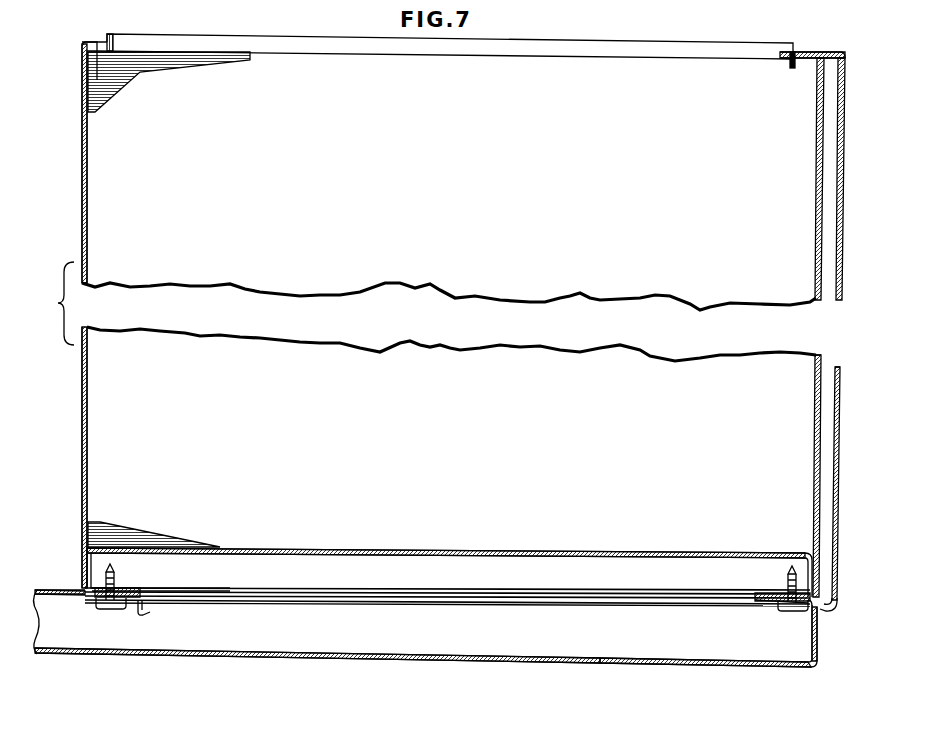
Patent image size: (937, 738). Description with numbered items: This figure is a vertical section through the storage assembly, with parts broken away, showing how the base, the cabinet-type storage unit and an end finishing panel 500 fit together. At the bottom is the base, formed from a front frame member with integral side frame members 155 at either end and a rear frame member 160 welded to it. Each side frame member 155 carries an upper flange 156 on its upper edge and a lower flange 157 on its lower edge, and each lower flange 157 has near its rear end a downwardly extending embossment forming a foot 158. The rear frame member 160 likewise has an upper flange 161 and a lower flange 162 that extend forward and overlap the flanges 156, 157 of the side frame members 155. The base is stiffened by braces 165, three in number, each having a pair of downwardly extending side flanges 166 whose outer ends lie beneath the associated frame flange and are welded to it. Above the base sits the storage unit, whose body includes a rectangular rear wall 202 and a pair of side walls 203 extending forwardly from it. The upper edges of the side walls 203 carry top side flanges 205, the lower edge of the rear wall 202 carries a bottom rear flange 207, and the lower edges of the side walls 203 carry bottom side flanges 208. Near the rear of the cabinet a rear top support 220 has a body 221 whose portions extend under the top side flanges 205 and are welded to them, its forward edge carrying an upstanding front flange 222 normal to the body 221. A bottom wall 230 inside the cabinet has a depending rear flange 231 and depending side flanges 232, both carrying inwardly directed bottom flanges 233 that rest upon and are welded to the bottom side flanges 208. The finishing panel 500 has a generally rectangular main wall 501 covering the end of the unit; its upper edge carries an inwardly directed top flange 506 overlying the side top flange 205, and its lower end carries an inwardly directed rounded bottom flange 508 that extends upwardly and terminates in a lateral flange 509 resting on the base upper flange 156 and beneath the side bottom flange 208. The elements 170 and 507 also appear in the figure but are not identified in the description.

The side frame members 155 is at (818, 653).
The upper flanges 156 is at (758, 606).
The lower flanges 157 is at (772, 668).
The foot 158 is at (725, 672).
The rear frame member 160 is at (453, 643).
The upper flange 161 is at (262, 598).
The lower flange 162 is at (244, 662).
The braces 165 is at (48, 600).
The side flanges 166 is at (145, 605).
The fastener 170 is at (115, 585).
The rear wall 202 is at (480, 169).
The side walls 203 is at (86, 195).
The top side flanges 205 is at (95, 42).
The bottom rear flange 207 is at (478, 594).
The bottom side flanges 208 is at (80, 588).
The rear top support 220 is at (341, 40).
The body 221 is at (98, 80).
The front flange 222 is at (172, 42).
The bottom wall 230 is at (448, 549).
The rear flange 231 is at (402, 565).
The side flanges 232 is at (84, 560).
The bottom flanges 233 is at (212, 572).
The finishing panel 500 is at (796, 343).
The main wall 501 is at (837, 152).
The top flange 506 is at (825, 51).
The clip 507 is at (790, 66).
The bottom flange 508 is at (822, 610).
The lateral flange 509 is at (812, 622).